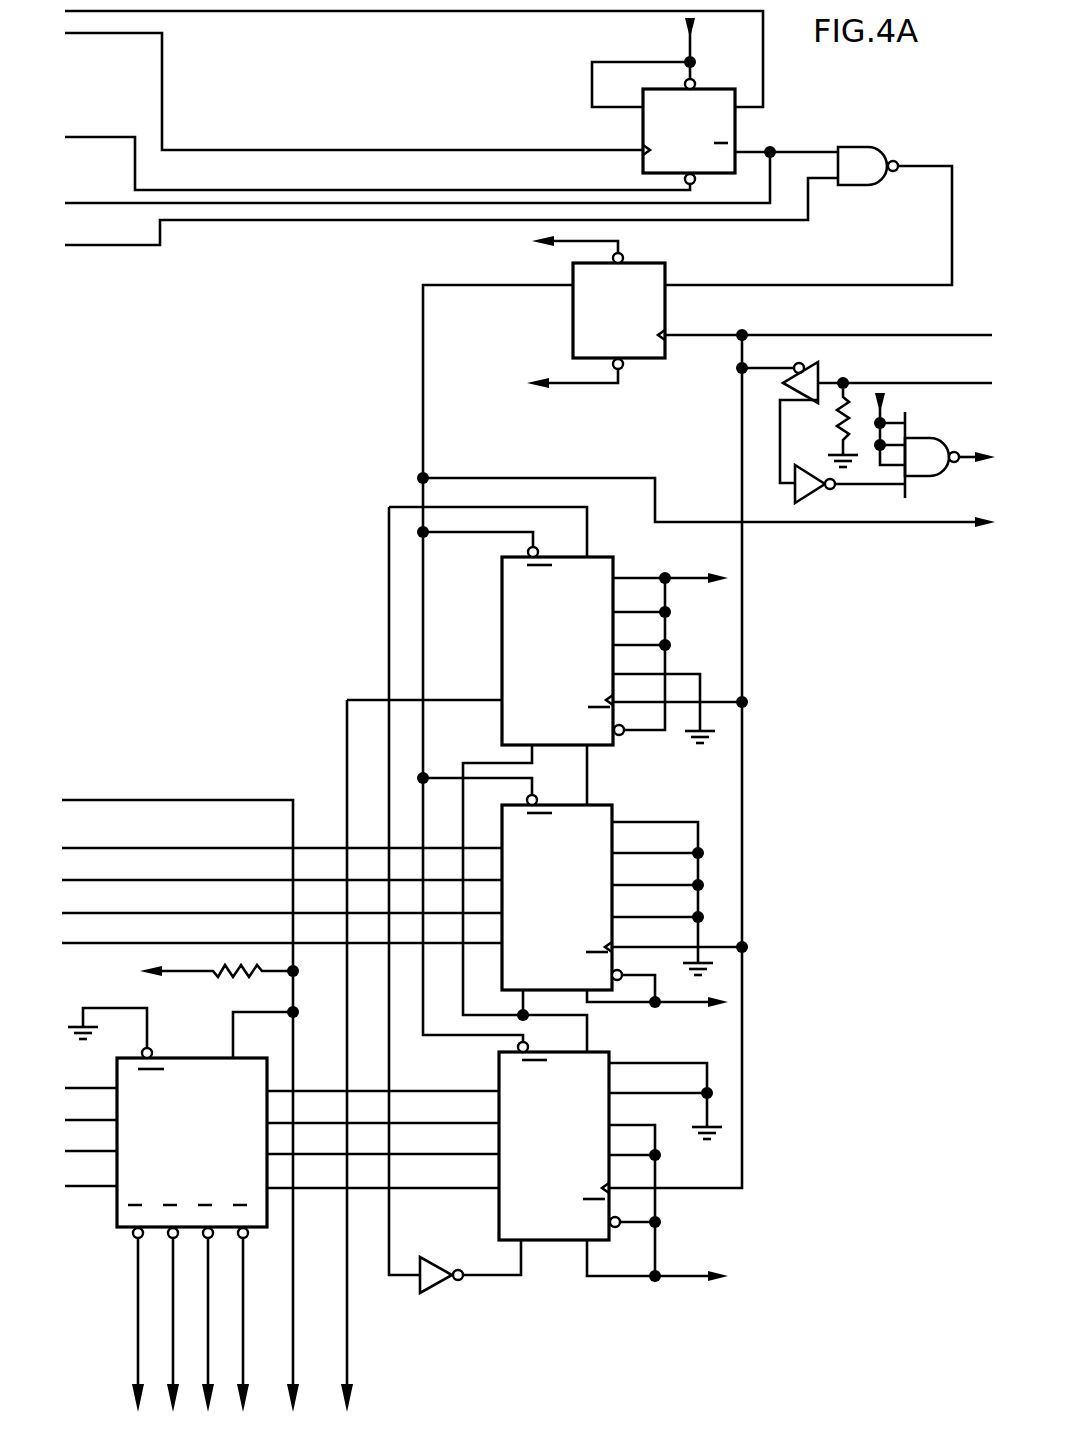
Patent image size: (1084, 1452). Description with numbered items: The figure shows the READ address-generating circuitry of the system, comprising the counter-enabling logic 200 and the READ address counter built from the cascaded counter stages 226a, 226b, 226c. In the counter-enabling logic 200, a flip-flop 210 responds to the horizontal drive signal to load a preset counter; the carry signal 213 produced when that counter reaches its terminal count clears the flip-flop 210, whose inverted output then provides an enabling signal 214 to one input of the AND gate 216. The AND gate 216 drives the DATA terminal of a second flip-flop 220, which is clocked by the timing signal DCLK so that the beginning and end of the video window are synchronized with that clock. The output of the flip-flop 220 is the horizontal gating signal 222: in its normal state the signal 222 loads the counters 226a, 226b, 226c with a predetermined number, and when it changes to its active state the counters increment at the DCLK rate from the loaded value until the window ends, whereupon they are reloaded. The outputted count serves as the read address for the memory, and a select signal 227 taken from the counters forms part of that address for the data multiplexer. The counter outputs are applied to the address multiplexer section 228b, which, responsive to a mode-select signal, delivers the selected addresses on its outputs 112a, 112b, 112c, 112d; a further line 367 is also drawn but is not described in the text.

The counter-enabling logic 200 is at (940, 134).
The flip-flop 210 is at (643, 134).
The carry signal 213 is at (456, 174).
The enabling signal 214 is at (790, 149).
The AND gate 216 is at (860, 147).
The flip-flop 220 is at (573, 328).
The horizontal gating signal 222 is at (423, 334).
The READ address counter 226a is at (502, 625).
The READ address counter 226b is at (613, 805).
The READ address counter 226c is at (499, 1220).
The address multiplexer 228b is at (180, 1058).
The select line 367 is at (293, 1272).
The select signal 227 is at (347, 1328).
The address multiplexer output 112a is at (243, 1291).
The address multiplexer output 112b is at (208, 1298).
The address multiplexer output 112c is at (173, 1256).
The address multiplexer output 112d is at (138, 1310).